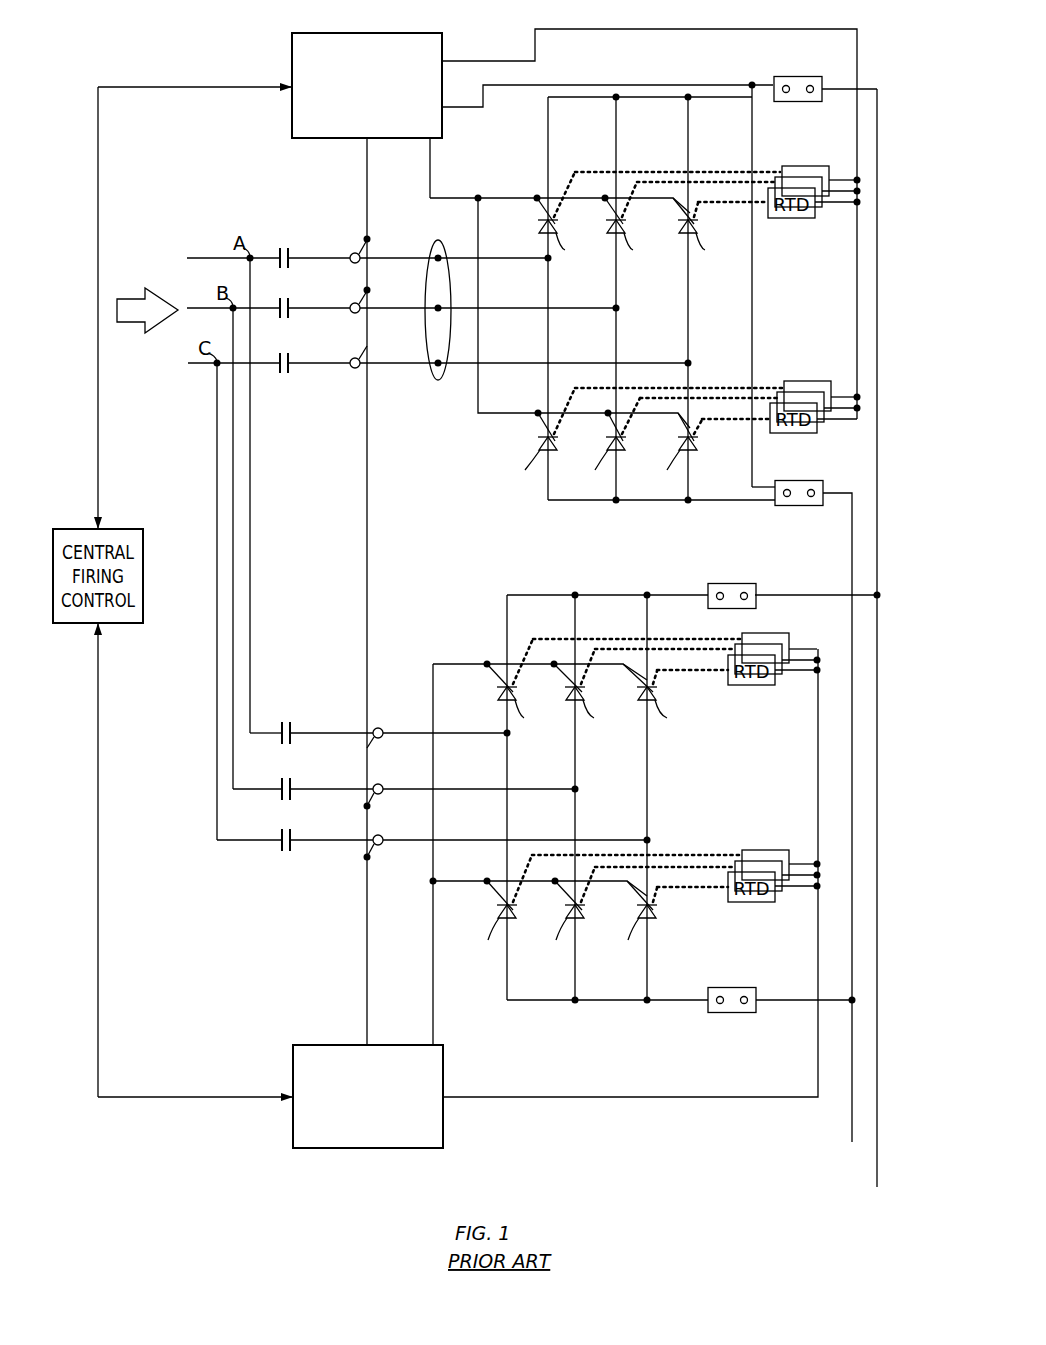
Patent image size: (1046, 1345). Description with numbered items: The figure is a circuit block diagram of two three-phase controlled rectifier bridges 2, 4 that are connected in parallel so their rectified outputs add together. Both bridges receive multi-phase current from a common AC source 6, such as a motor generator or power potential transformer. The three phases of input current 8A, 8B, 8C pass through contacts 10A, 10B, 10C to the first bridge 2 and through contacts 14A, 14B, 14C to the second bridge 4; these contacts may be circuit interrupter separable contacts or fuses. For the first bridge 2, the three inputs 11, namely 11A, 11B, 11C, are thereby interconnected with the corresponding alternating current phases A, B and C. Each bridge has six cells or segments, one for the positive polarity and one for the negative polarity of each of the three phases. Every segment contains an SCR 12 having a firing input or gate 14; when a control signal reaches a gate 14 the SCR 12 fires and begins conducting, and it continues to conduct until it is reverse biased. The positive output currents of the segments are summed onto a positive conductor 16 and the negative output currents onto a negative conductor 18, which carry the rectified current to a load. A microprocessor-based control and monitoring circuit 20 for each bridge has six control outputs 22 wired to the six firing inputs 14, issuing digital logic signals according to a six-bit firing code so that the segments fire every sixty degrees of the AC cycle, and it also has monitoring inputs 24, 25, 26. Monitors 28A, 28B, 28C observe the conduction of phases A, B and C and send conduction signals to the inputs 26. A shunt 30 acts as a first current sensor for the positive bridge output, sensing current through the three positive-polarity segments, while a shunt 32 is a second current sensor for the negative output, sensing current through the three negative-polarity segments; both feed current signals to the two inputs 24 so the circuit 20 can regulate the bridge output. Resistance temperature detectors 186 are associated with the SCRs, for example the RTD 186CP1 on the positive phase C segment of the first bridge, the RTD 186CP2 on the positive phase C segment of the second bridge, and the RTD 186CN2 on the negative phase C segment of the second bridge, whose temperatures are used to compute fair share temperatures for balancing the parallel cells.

The controlled rectifier bridge 2 is at (516, 80).
The controlled rectifier bridge 4 is at (734, 806).
The AC source 6 is at (432, 172).
The phase of input current 8A is at (189, 257).
The phase of input current 8B is at (189, 307).
The phase of input current 8C is at (190, 367).
The contact 10A is at (284, 247).
The contact 10B is at (288, 298).
The contact 10C is at (284, 375).
The inputs 11 is at (436, 245).
The input 11A is at (437, 262).
The input 11B is at (437, 313).
The input 11C is at (437, 369).
The SCR 12 is at (557, 224).
The firing input 14 is at (543, 208).
The contact 14A is at (286, 720).
The contact 14B is at (286, 776).
The contact 14C is at (286, 828).
The positive conductor 16 is at (877, 1186).
The negative conductor 18 is at (852, 1140).
The control and monitoring circuit 20 is at (300, 33).
The control outputs 22 is at (428, 142).
The monitoring inputs 24 is at (442, 107).
The monitoring input 25 is at (442, 61).
The monitoring inputs 26 is at (360, 142).
The monitor 28A is at (352, 253).
The monitor 28B is at (352, 313).
The monitor 28C is at (352, 368).
The shunt 30 is at (806, 76).
The shunt 32 is at (806, 507).
The RTD 186 is at (798, 160).
The RTD 186CP1 is at (788, 218).
The RTD 186CP2 is at (732, 685).
The RTD 186CN2 is at (770, 902).